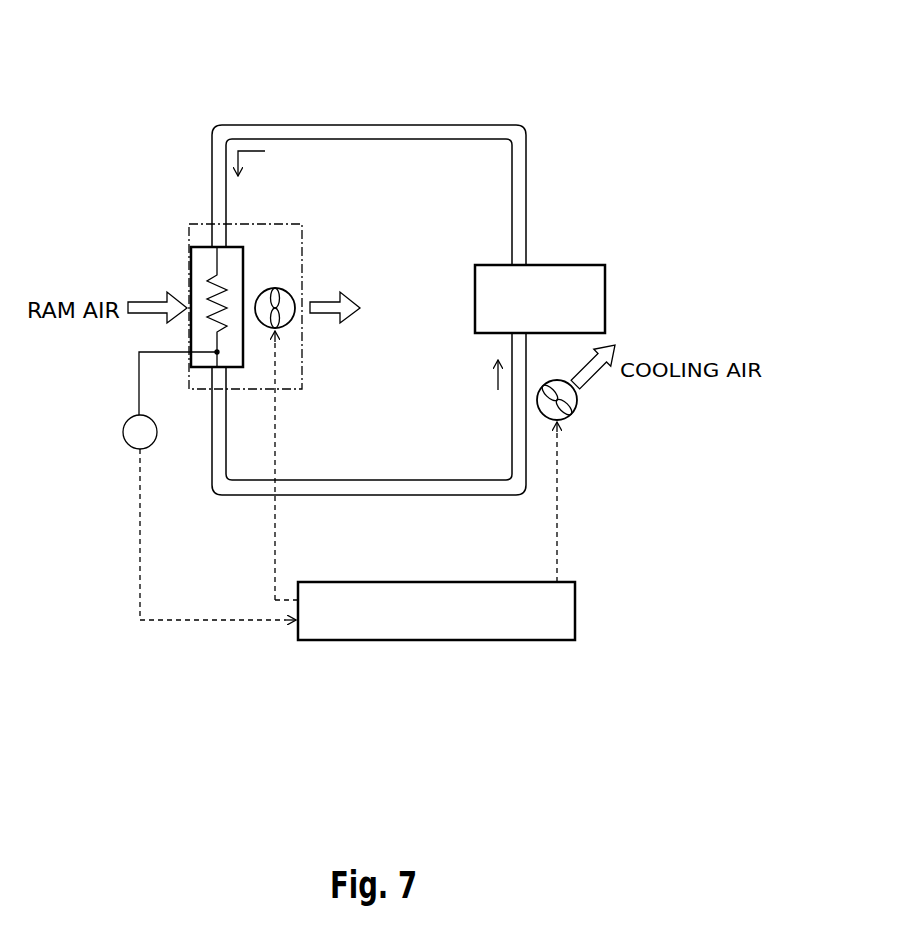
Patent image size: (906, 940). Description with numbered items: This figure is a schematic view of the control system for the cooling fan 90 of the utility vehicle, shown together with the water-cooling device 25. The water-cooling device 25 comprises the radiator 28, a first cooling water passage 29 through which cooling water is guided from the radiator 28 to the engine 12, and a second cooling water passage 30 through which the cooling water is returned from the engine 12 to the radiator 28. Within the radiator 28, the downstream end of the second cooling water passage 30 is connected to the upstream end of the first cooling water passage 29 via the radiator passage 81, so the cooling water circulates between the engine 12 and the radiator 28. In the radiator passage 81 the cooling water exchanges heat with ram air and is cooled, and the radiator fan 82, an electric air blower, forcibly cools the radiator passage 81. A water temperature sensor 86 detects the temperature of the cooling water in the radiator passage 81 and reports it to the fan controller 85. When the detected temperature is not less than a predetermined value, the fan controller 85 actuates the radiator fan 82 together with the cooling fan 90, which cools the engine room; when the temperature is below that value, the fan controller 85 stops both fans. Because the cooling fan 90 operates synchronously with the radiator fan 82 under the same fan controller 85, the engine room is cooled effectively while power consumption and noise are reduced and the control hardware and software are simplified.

The water-cooling device 25 is at (541, 112).
The second cooling water passage 30 is at (374, 126).
The first cooling water passage 29 is at (372, 486).
The radiator 28 is at (304, 250).
The radiator passage 81 is at (200, 246).
The radiator fan 82 is at (286, 290).
The engine 12 is at (584, 265).
The cooling fan 90 is at (577, 411).
The water temperature sensor 86 is at (126, 425).
The fan controller 85 is at (434, 642).